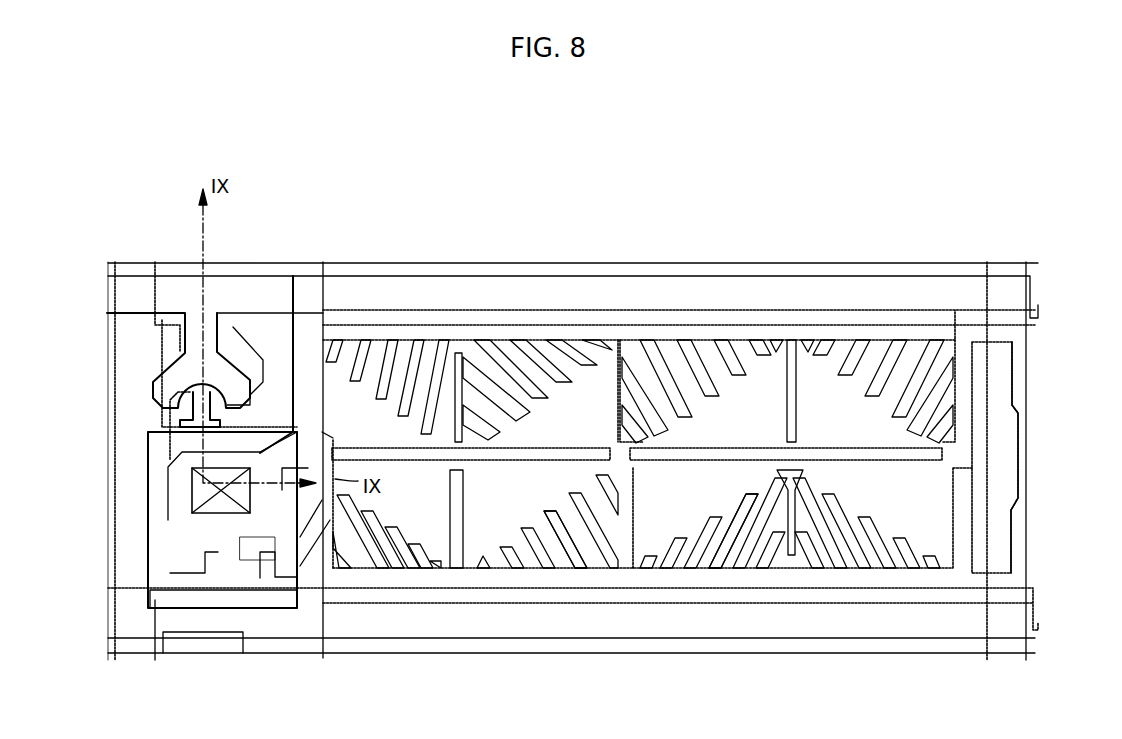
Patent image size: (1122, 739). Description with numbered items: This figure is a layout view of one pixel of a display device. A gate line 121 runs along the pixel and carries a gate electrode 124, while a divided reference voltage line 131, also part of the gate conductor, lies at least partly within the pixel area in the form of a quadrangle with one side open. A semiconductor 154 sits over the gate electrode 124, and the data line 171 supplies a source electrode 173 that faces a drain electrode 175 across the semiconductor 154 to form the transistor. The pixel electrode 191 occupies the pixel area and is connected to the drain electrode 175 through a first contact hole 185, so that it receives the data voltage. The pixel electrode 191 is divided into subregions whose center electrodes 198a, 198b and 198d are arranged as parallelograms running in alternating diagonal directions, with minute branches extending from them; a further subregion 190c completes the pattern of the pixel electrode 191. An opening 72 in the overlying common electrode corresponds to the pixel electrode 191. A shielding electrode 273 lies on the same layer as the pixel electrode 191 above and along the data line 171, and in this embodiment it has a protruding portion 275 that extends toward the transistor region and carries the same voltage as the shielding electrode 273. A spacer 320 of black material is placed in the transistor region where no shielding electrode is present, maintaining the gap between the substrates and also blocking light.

The opening 72 is at (565, 460).
The gate line 121 is at (113, 535).
The gate electrode 124 is at (176, 345).
The divided reference voltage line 131 is at (968, 312).
The semiconductor 154 is at (183, 402).
The data line 171 is at (573, 275).
The source electrode 173 is at (228, 382).
The drain electrode 175 is at (160, 408).
The first contact hole 185 is at (228, 514).
The pixel electrode sub-region 190c is at (652, 532).
The pixel electrode 191 is at (953, 546).
The center electrode of the first subregion 198a is at (310, 402).
The center electrode of the second subregion 198b is at (483, 537).
The center electrode of the fourth subregion 198d is at (935, 493).
The shielding electrode 273 is at (645, 262).
The protruding portion 275 is at (160, 346).
The spacer 320 is at (266, 612).